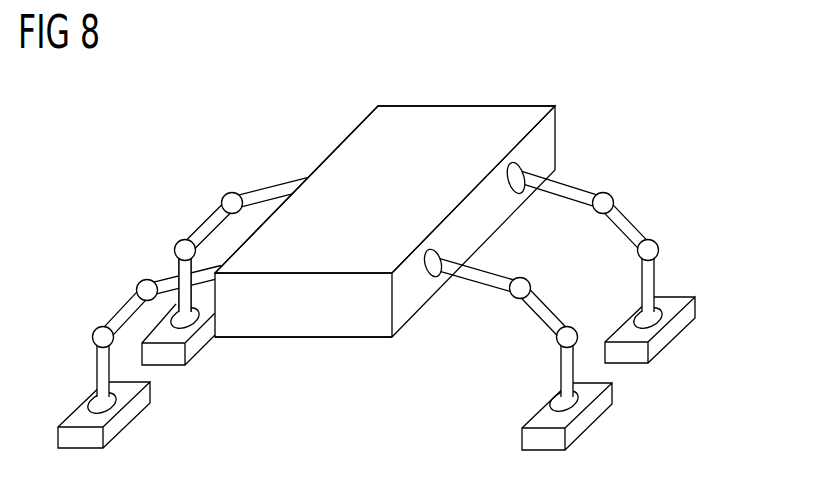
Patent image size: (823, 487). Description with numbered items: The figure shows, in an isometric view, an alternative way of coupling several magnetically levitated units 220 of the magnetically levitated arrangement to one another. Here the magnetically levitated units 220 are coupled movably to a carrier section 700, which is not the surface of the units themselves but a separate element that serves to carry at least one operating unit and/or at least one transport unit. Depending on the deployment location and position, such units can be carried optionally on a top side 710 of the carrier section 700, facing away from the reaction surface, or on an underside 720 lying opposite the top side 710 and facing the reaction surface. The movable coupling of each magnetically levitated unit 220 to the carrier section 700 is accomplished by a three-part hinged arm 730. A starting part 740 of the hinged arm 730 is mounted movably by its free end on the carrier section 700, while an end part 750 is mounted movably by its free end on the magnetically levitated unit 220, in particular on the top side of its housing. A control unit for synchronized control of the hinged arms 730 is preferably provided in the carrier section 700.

The carrier section 700 is at (328, 97).
The top side 710 is at (497, 120).
The underside 720 is at (327, 340).
The hinged arm 730 is at (205, 202).
The starting part 740 is at (310, 162).
The end part 750 is at (97, 400).
The magnetically levitated unit 220 is at (195, 362).